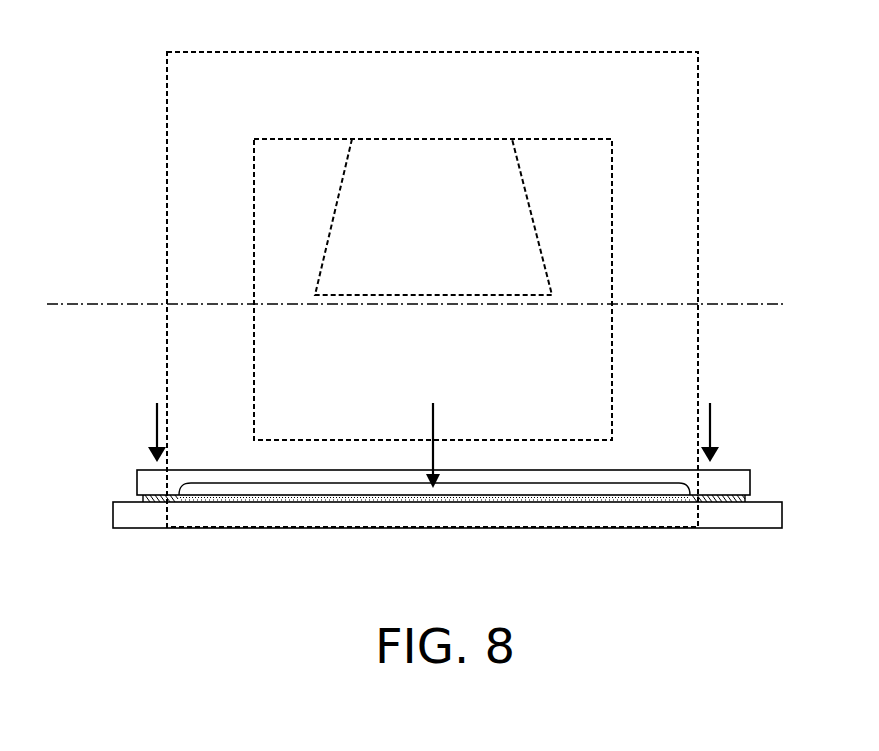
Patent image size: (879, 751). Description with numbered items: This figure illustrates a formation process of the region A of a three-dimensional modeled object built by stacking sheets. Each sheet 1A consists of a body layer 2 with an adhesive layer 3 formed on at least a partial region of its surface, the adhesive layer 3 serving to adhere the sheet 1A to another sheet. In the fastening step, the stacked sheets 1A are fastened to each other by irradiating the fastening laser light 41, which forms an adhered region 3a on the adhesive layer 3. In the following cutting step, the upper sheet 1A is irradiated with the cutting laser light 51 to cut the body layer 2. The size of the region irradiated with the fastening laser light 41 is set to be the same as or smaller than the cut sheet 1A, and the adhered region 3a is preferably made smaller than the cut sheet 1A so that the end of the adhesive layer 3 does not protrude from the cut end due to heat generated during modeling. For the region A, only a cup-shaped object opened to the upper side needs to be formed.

The sheet 1A is at (380, 481).
The body layer 2 is at (137, 483).
The adhesive layer 3 is at (145, 497).
The adhered region 3a is at (222, 483).
The fastening laser light 41 is at (436, 417).
The cutting laser light 51 is at (155, 417).
The region A is at (797, 305).